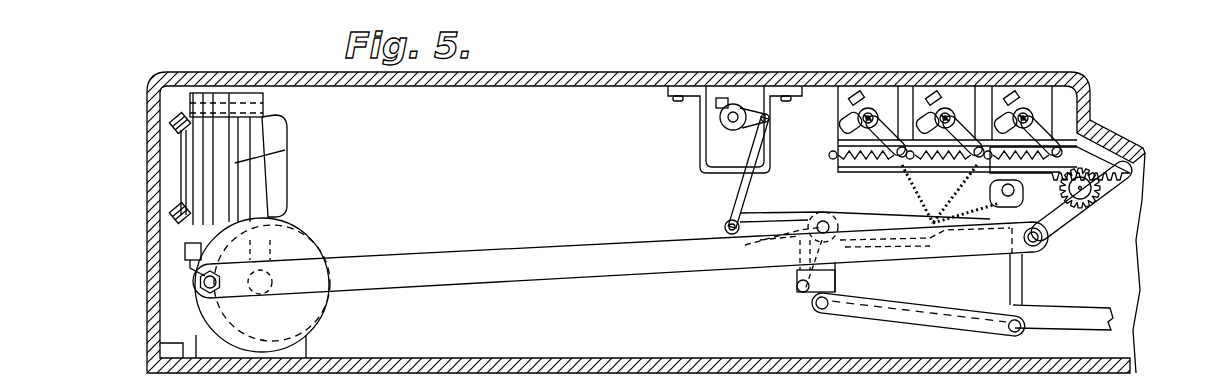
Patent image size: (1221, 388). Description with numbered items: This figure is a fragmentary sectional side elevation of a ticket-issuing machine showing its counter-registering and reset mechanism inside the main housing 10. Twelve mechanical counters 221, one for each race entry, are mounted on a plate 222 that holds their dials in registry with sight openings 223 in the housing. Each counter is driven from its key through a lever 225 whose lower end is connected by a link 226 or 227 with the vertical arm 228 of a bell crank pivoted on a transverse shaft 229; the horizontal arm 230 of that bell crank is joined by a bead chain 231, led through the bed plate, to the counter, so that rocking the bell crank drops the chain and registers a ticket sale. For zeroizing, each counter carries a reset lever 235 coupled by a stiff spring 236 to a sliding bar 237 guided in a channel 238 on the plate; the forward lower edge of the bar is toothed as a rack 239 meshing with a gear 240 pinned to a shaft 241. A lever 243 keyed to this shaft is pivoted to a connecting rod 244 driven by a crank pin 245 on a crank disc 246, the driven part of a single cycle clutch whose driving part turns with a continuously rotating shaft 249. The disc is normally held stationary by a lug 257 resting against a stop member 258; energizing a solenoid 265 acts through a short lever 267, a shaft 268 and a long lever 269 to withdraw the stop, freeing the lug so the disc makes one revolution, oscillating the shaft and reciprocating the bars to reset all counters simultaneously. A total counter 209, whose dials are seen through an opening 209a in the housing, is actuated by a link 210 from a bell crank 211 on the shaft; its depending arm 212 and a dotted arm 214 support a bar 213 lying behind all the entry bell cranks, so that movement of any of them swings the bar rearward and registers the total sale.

The housing cover 10 is at (1101, 101).
The opening 209a is at (742, 84).
The total counter 209 is at (720, 146).
The link 210 is at (742, 187).
The bell crank 211 is at (783, 218).
The depending arm 212 is at (795, 277).
The bar 213 is at (797, 291).
The arm 214 is at (770, 243).
The mechanical counter 221 is at (928, 58).
The plate 222 is at (850, 172).
The sight opening 223 is at (863, 85).
The lever 225 is at (1024, 275).
The link 226 is at (935, 318).
The link 227 is at (1030, 330).
The vertical arm 228 is at (840, 283).
The shaft 229 is at (840, 220).
The horizontal arm 230 is at (884, 225).
The bead chain 231 is at (922, 200).
The lever 235 is at (1012, 103).
The stiff spring 236 is at (905, 170).
The sliding bar 237 is at (1084, 152).
The channel 238 is at (838, 142).
The rack 239 is at (1102, 186).
The gear 240 is at (1090, 193).
The shaft 241 is at (1092, 204).
The lever 243 is at (1070, 216).
The connecting rod 244 is at (560, 280).
The crank pin 245 is at (190, 289).
The crank disc 246 is at (316, 314).
The continuously rotating shaft 249 is at (300, 258).
The lug 257 is at (188, 253).
The stop member 258 is at (194, 270).
The solenoid 265 is at (278, 138).
The short lever 267 is at (286, 152).
The shaft 268 is at (268, 113).
The long lever 269 is at (186, 167).